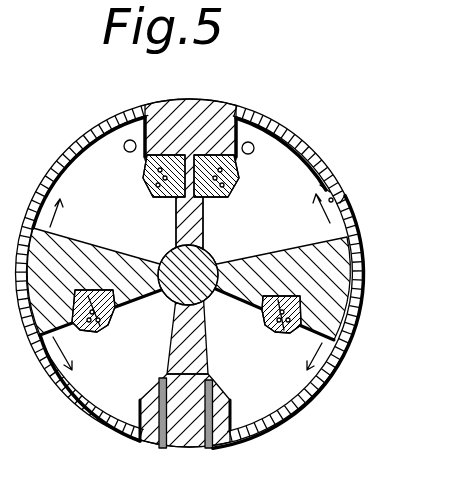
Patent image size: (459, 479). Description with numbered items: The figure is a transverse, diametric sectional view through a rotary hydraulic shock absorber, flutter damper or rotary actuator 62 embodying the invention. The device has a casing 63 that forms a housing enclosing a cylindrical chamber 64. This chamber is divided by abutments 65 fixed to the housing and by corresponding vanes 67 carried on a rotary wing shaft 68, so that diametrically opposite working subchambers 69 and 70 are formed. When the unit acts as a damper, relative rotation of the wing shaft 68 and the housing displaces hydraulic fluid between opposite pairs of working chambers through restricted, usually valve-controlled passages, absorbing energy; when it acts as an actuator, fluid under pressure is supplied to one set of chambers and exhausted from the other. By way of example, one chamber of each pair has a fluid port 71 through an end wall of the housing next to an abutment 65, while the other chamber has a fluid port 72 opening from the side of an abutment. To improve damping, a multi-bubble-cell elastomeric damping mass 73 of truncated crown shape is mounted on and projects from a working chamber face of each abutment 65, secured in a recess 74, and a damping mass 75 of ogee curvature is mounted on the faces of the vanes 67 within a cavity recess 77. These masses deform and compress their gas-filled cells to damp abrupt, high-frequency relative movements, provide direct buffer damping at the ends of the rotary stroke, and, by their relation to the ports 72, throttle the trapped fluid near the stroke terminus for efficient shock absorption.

The rotary hydraulic shock absorber 62 is at (291, 120).
The casing 63 is at (309, 183).
The cylindrical chamber 64 is at (345, 196).
The abutments 65 is at (222, 112).
The vanes 67 is at (96, 230).
The rotary wing shaft 68 is at (210, 252).
The working subchamber 69 is at (286, 170).
The working subchamber 70 is at (75, 178).
The fluid port 71 is at (127, 151).
The fluid port 72 is at (157, 384).
The elastomeric damping mass 73 is at (125, 208).
The recess 74 is at (146, 176).
The damping mass 75 is at (115, 318).
The cavity recess 77 is at (97, 292).